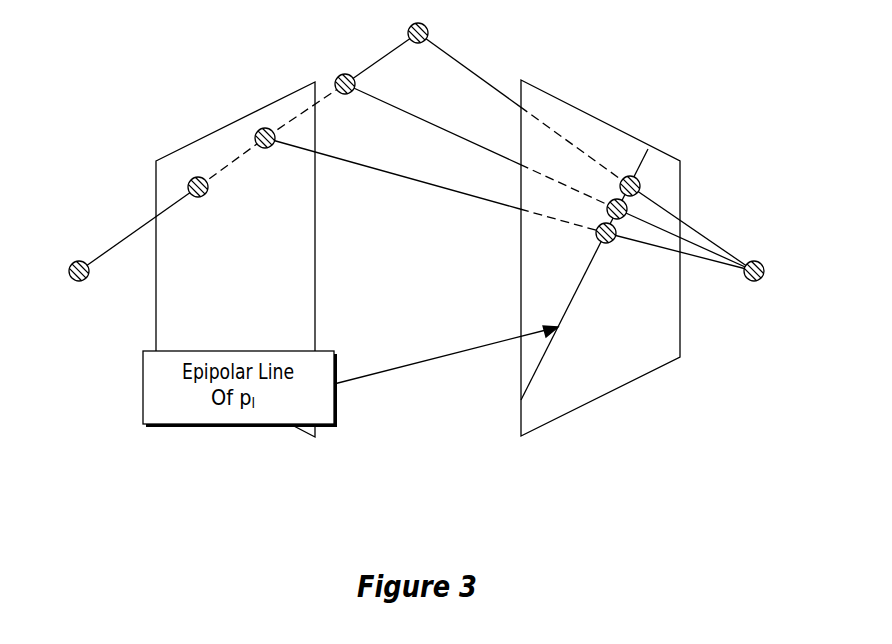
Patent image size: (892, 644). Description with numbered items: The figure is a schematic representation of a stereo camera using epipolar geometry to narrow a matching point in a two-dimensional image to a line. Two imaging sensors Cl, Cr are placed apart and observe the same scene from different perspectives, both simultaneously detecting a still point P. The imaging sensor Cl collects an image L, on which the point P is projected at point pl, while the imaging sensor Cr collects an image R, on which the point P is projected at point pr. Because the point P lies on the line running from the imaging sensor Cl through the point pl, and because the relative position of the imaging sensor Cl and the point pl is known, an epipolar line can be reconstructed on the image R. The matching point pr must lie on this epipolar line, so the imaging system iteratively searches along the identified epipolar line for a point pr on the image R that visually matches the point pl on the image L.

The still point P is at (305, 111).
The image L is at (235, 259).
The image R is at (600, 258).
The projected point Pl pl is at (203, 200).
The matching point Pr pr is at (584, 274).
The imaging sensor Cl is at (71, 284).
The imaging sensor Cr is at (754, 284).